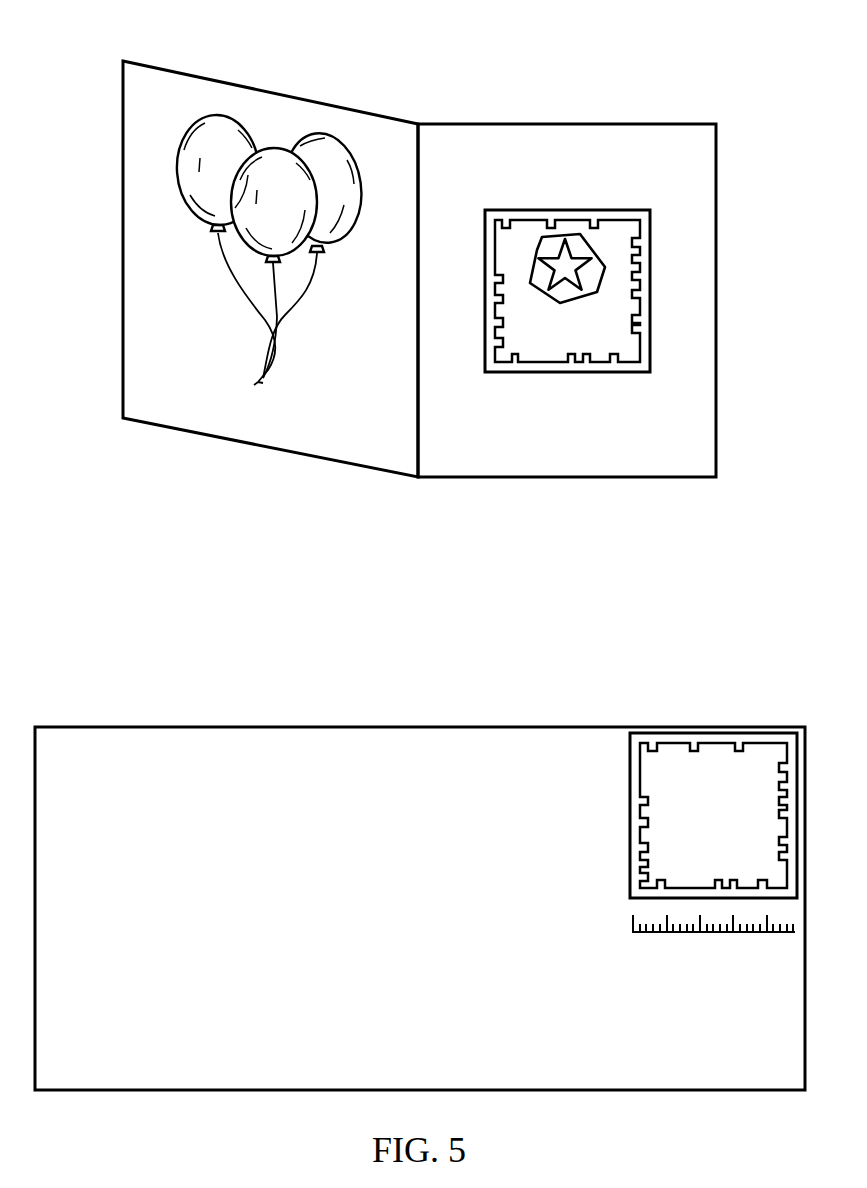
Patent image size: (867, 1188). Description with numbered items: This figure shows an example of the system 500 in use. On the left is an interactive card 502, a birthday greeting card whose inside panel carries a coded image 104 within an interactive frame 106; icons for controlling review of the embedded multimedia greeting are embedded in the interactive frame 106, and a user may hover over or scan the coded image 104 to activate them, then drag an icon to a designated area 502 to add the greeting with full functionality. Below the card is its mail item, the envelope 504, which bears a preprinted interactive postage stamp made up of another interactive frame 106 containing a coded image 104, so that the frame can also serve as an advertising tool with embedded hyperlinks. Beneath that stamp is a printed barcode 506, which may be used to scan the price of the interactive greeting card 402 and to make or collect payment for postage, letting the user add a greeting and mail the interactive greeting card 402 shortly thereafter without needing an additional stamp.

The system 500 is at (507, 70).
The interactive card 502 is at (627, 124).
The coded image 104 is at (638, 242).
The interactive frame 106 is at (650, 323).
The interactive greeting card 402 is at (716, 434).
The envelope 504 is at (263, 677).
The printed barcode 506 is at (677, 933).